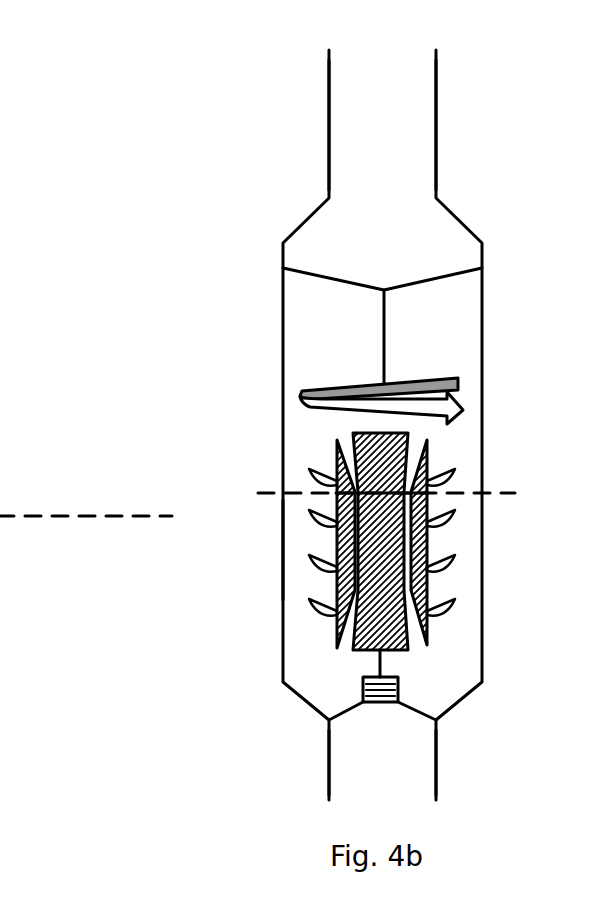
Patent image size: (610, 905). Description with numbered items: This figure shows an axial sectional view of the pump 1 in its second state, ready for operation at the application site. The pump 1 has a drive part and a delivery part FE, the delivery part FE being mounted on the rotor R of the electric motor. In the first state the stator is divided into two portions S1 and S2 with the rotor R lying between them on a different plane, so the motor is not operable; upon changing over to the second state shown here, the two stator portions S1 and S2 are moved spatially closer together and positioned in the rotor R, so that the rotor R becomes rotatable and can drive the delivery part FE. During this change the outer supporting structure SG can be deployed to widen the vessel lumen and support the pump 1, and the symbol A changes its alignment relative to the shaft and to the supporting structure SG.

The pump 1 is at (470, 88).
The alignment indicator A is at (382, 278).
The rotor R is at (337, 437).
The delivery part FE is at (307, 472).
The first stator portion S1 is at (395, 435).
The second stator portion S2 is at (471, 670).
The supporting structure SG is at (282, 547).